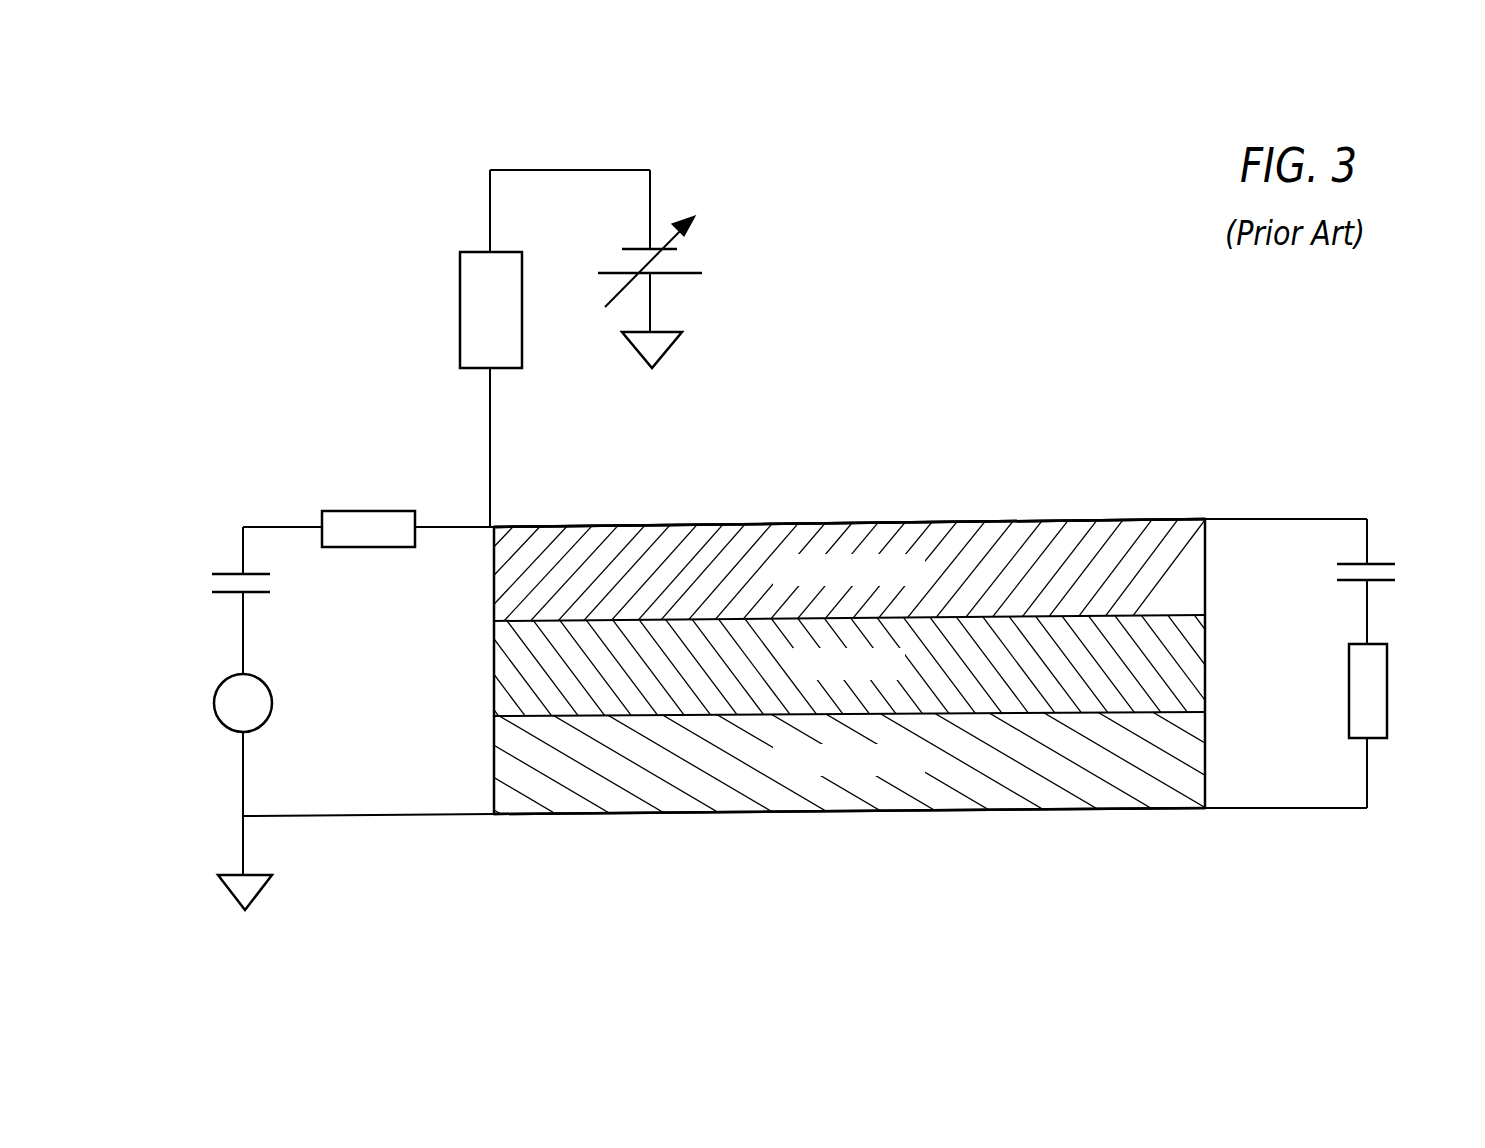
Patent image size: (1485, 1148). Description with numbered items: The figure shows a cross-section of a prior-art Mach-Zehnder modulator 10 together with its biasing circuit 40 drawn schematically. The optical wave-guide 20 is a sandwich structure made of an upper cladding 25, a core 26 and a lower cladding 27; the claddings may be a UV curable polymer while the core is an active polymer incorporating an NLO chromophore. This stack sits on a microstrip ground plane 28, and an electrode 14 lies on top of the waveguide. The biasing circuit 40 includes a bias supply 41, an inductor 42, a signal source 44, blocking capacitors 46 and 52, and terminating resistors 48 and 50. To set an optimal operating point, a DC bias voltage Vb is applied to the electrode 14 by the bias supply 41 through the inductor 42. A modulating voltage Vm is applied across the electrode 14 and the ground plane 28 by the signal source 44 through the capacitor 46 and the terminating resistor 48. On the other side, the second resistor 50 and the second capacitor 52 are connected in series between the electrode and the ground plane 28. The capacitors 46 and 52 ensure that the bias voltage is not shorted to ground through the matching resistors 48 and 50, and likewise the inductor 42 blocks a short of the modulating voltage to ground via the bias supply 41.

The Mach-Zehnder modulator 10 is at (1048, 426).
The electrode 14 is at (1143, 520).
The optical wave-guide 20 is at (843, 518).
The upper cladding 25 is at (1210, 558).
The core 26 is at (1208, 658).
The lower cladding 27 is at (1208, 758).
The microstrip ground plane 28 is at (878, 812).
The biasing circuit 40 is at (340, 368).
The bias supply 41 is at (685, 257).
The inductor 42 is at (468, 252).
The signal source 44 is at (222, 683).
The blocking capacitor 46 is at (232, 572).
The terminating resistor 48 is at (322, 522).
The second resistor 50 is at (1385, 710).
The second capacitor 52 is at (1378, 562).